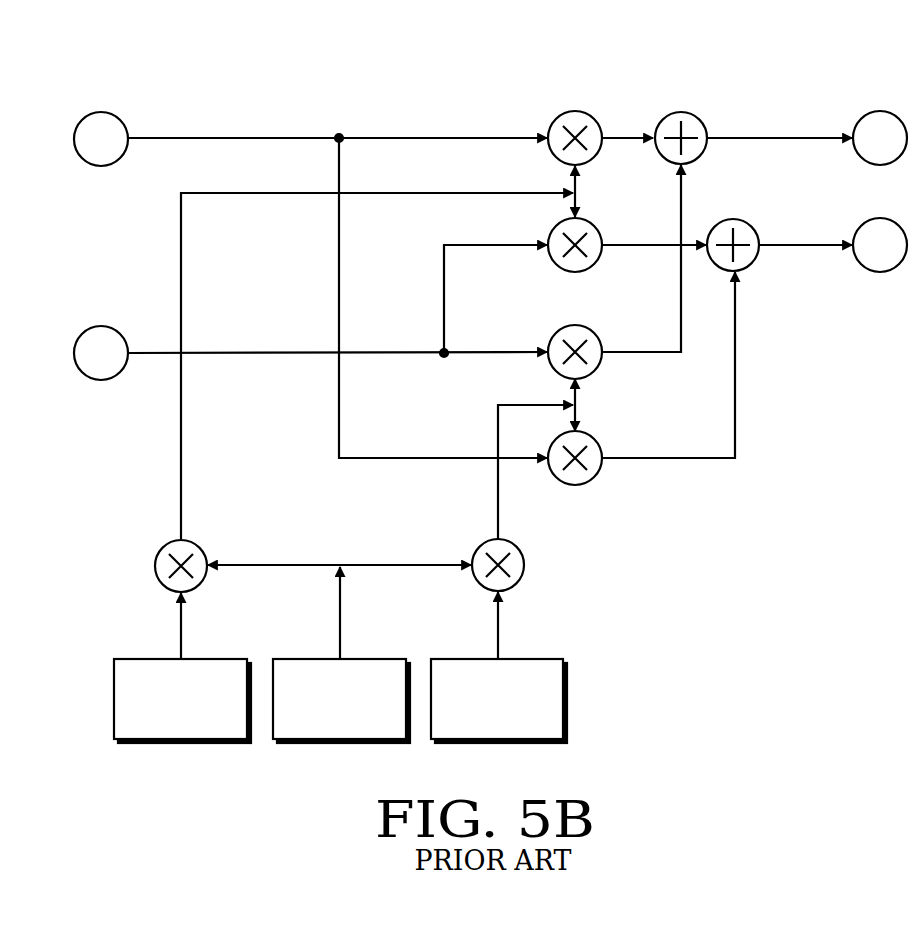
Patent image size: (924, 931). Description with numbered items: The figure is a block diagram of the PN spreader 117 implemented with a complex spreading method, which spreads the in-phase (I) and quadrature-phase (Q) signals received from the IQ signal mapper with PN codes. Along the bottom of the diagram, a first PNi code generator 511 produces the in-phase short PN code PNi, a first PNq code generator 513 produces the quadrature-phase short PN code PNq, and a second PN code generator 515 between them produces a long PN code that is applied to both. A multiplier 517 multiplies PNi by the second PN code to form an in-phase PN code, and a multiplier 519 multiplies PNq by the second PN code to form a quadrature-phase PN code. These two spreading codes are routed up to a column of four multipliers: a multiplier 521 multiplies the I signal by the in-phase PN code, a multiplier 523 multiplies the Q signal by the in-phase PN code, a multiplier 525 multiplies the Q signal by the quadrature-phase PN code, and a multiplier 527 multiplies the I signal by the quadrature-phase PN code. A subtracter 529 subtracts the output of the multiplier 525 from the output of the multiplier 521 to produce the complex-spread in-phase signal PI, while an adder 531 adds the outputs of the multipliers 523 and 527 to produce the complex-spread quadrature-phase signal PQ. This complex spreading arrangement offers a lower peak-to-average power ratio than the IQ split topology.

The PN spreader 117 is at (858, 42).
The first PNi code generator 511 is at (233, 658).
The first PNq code generator 513 is at (549, 658).
The second PN code generator 515 is at (391, 658).
The multiplier 517 is at (160, 546).
The multiplier 519 is at (519, 546).
The multiplier 521 is at (597, 118).
The multiplier 523 is at (597, 225).
The multiplier 525 is at (597, 332).
The multiplier 527 is at (597, 438).
The subtracter 529 is at (702, 118).
The adder 531 is at (754, 225).